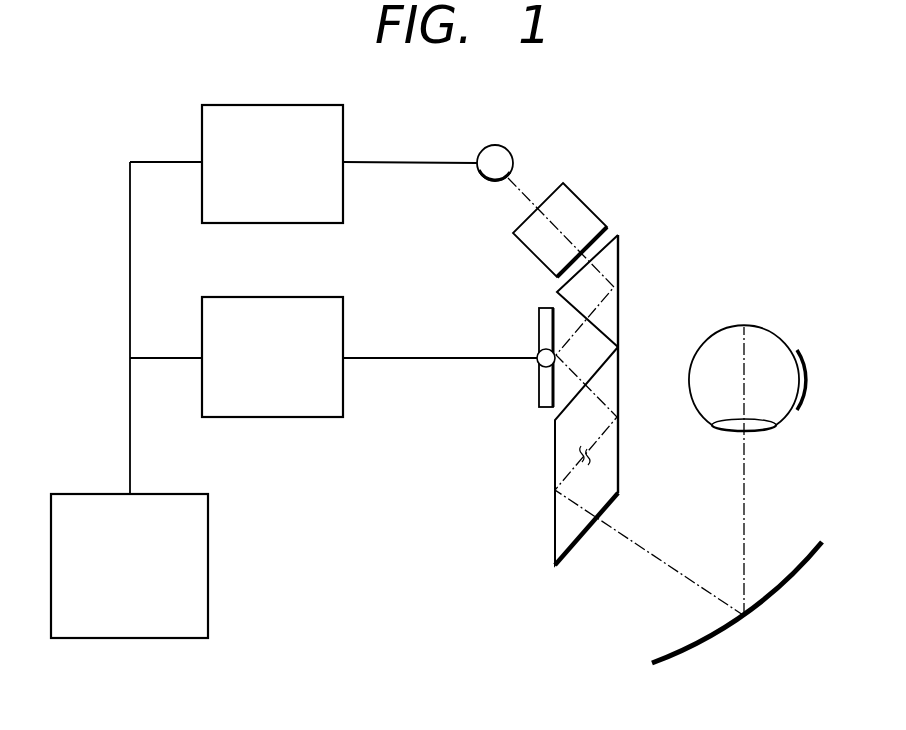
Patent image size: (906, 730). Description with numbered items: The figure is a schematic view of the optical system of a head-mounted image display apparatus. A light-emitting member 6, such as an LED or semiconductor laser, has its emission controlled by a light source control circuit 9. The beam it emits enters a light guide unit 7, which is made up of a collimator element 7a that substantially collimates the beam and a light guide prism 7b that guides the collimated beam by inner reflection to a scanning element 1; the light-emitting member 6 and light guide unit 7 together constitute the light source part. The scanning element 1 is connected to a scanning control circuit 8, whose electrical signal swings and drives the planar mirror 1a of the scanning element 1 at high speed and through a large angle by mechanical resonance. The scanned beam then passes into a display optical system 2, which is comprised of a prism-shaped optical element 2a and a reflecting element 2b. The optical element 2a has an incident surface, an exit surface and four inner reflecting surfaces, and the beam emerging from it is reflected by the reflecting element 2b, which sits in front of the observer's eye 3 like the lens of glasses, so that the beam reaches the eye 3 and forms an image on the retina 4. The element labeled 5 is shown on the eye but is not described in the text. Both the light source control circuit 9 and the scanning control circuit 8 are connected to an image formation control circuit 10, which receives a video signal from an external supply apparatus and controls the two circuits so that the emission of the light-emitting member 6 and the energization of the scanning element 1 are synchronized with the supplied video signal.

The scanning element 1 is at (507, 359).
The planar mirror 1a is at (538, 380).
The display optical system 2 is at (655, 524).
The optical element 2a is at (553, 522).
The reflecting element 2b is at (705, 643).
The observer's eye 3 is at (754, 441).
The retina 4 is at (735, 325).
The pupil 5 is at (747, 432).
The light-emitting member 6 is at (502, 145).
The light guide unit 7 is at (562, 240).
The collimator element 7a is at (523, 218).
The light guide prism 7b is at (558, 288).
The scanning control circuit 8 is at (345, 307).
The light source control circuit 9 is at (345, 120).
The image formation control circuit 10 is at (208, 560).